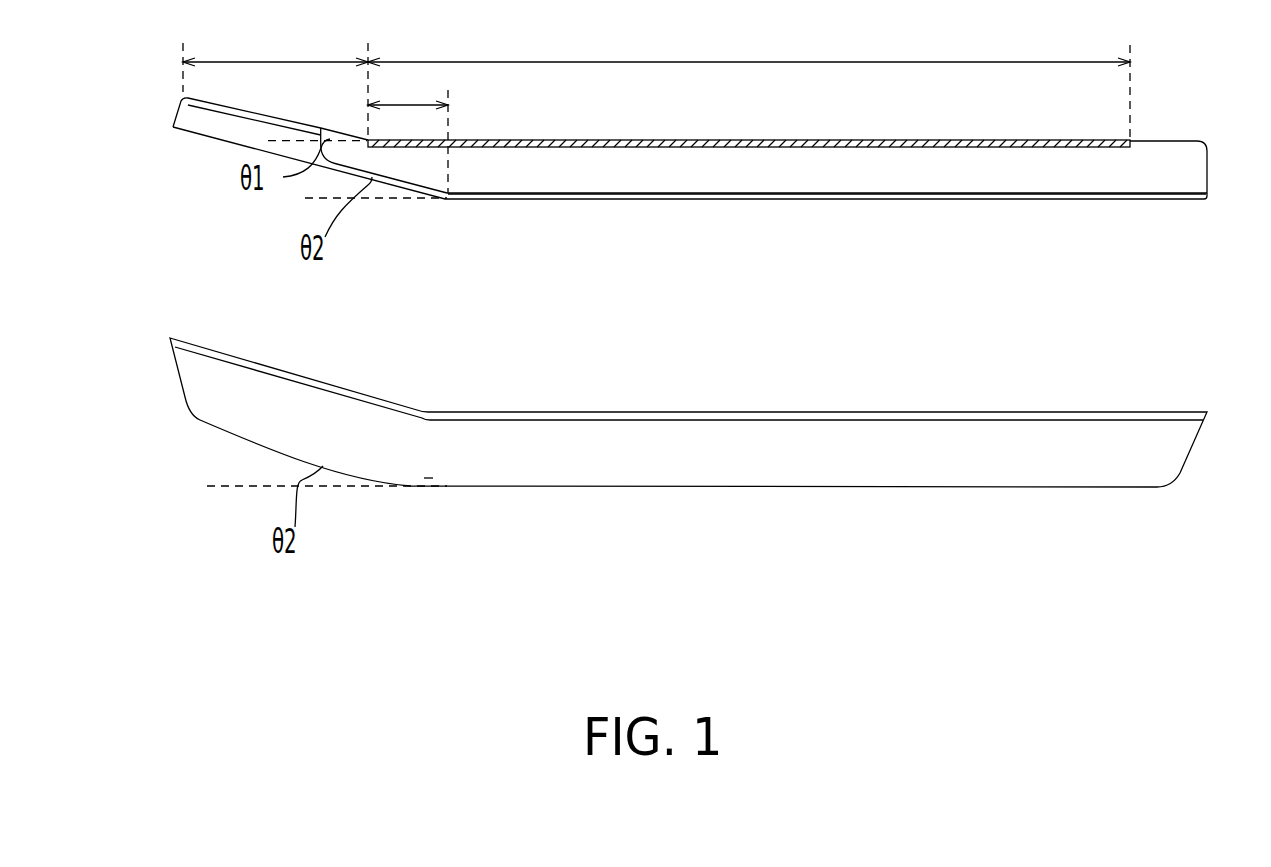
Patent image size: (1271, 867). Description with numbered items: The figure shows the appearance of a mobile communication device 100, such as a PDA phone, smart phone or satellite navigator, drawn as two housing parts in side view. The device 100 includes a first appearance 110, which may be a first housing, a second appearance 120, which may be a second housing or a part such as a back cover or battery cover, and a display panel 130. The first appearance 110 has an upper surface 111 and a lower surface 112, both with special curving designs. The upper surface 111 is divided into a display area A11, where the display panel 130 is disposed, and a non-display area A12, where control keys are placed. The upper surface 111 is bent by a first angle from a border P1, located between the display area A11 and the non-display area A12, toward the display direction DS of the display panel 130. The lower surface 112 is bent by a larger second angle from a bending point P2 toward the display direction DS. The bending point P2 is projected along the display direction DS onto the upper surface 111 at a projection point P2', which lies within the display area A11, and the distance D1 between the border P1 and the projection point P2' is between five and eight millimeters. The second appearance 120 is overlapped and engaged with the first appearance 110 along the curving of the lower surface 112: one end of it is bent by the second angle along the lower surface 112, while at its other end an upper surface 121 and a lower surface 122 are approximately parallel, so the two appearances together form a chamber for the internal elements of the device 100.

The mobile communication device 100 is at (655, 340).
The first appearance 110 is at (655, 139).
The upper surface 111 is at (1160, 140).
The lower surface 112 is at (1143, 200).
The second appearance 120 is at (646, 417).
The upper surface 121 is at (1152, 412).
The lower surface 122 is at (1105, 487).
The display panel 130 is at (985, 140).
The display area A11 is at (749, 40).
The non-display area A12 is at (275, 41).
The distance D1 is at (408, 86).
The border P1 is at (358, 127).
The bending point P2 is at (463, 236).
The projection point P2' is at (499, 107).
The display direction DS is at (778, 128).